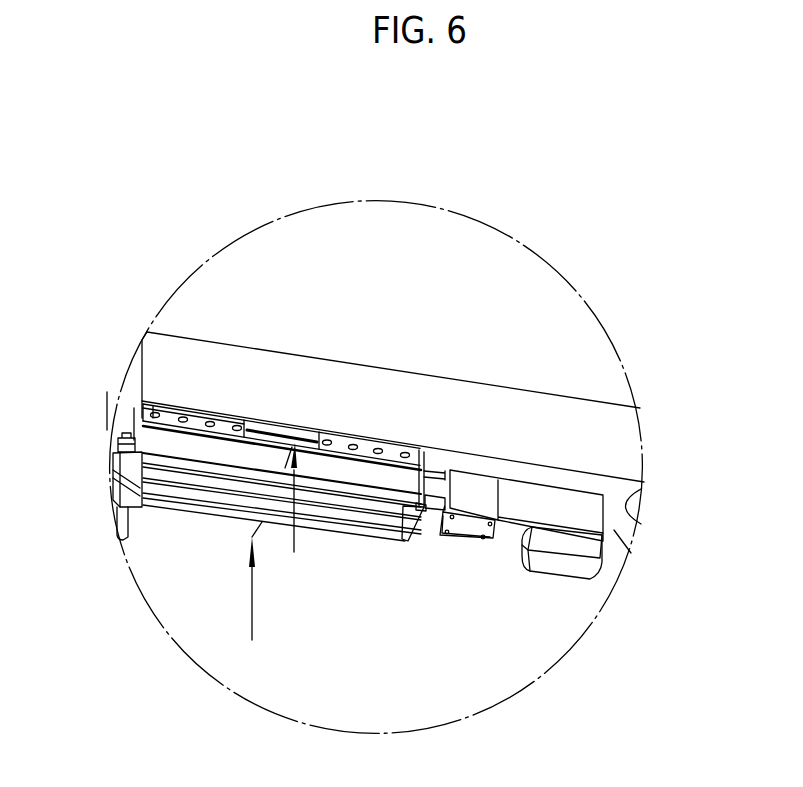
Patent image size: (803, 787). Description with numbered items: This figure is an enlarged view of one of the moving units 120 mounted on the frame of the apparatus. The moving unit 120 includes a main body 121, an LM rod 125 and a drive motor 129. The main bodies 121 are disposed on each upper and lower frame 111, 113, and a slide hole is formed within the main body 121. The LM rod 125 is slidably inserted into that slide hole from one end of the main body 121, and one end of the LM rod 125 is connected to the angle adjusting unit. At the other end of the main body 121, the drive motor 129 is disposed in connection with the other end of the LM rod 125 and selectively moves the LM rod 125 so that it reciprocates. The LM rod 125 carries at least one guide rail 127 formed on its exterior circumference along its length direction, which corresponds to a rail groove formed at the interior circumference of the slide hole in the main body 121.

The moving unit 120 is at (344, 449).
The upper frame 111 is at (389, 422).
The lower frame 113 is at (463, 400).
The main body 121 is at (360, 472).
The LM rod 125 is at (112, 441).
The guide rail 127 is at (133, 445).
The drive motor 129 is at (555, 500).